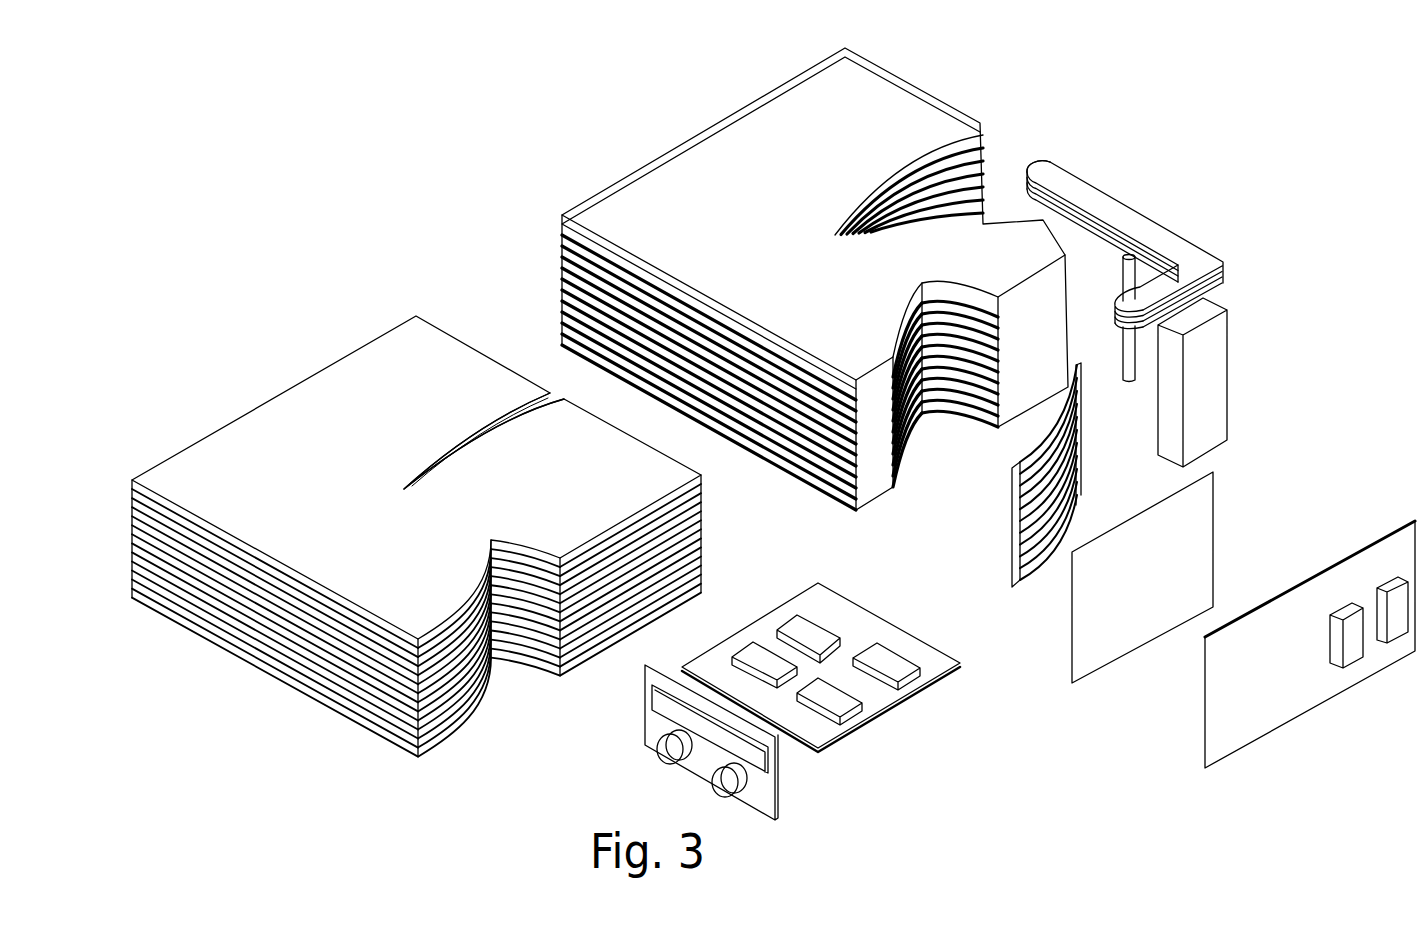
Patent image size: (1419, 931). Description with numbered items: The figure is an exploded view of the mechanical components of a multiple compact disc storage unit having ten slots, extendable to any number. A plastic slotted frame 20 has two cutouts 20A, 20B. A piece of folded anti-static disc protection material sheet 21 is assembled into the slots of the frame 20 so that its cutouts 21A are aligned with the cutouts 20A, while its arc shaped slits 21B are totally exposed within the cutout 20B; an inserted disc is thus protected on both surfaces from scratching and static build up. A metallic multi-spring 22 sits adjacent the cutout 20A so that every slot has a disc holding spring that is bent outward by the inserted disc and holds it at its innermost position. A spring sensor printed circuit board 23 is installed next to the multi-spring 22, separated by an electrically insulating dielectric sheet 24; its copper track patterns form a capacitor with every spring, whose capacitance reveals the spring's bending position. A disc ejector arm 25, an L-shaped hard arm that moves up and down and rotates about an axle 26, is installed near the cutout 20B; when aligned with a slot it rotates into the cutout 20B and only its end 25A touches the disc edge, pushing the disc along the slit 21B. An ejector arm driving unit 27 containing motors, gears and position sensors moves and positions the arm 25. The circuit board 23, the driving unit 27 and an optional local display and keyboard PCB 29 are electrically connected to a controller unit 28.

The plastic slotted frame 20 is at (810, 287).
The cutout 20A is at (952, 415).
The cutout 20B is at (950, 169).
The folded anti-static disc protection material sheet 21 is at (416, 538).
The cutouts 21A is at (507, 665).
The arc shaped slits 21B is at (523, 407).
The metallic multi-spring 22 is at (1027, 580).
The spring sensor printed circuit board 23 is at (1263, 737).
The electrically insulating dielectric sheet 24 is at (1103, 667).
The disc ejector arm 25 is at (1125, 211).
The end of the disc ejector arm 25A is at (1030, 158).
The axle 26 is at (1142, 365).
The ejector arm driving unit 27 is at (1228, 365).
The controller unit 28 is at (890, 707).
The local display and keyboard PCB 29 is at (690, 773).